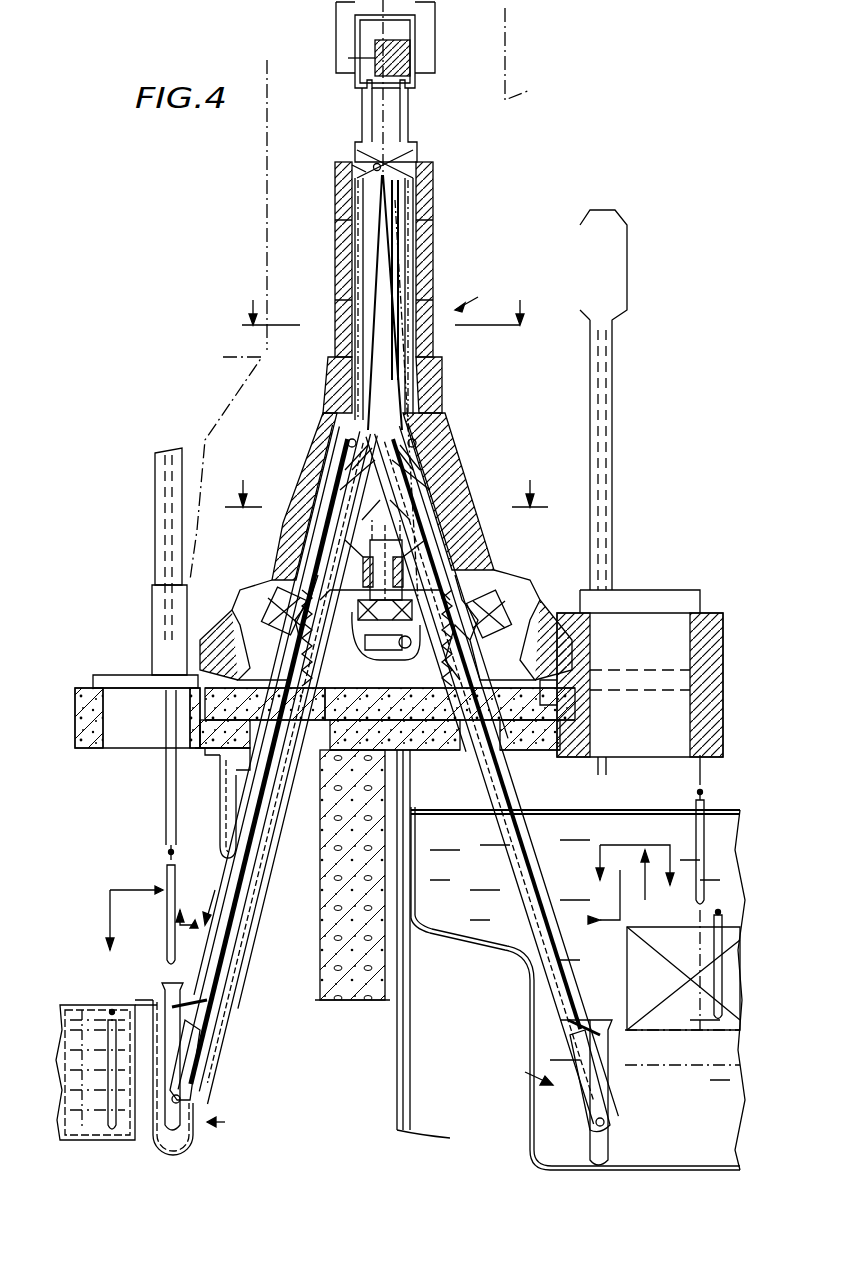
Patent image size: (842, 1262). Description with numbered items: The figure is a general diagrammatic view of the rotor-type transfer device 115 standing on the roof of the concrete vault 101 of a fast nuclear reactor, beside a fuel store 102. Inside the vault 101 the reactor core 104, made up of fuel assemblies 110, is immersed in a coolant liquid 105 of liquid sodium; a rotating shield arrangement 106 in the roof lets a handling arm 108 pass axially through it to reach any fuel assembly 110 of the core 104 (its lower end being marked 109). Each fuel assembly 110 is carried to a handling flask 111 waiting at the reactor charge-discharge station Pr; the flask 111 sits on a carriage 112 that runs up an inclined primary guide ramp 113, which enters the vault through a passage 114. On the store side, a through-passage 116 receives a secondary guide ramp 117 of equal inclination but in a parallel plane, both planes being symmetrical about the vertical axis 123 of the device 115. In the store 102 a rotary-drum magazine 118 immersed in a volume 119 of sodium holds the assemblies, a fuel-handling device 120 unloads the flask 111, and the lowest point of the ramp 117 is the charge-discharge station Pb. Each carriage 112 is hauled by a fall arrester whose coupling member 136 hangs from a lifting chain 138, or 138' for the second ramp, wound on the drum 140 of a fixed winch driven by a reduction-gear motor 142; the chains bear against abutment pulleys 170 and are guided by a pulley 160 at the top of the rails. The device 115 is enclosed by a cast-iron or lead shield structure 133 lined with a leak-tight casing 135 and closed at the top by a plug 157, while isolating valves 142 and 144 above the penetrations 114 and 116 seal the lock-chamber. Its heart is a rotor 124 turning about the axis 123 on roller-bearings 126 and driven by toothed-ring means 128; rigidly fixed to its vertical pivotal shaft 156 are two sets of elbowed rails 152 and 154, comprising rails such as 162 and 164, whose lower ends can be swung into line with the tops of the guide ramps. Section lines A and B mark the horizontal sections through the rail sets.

The reduction-gear motor / valve 142 is at (345, 50).
The vertical axis 123 is at (398, 25).
The drum 140 is at (405, 98).
The lifting chain 138 is at (311, 541).
The lifting chain 138' is at (481, 499).
The plug 157 is at (418, 155).
The pulley 160 is at (352, 172).
The rotor 124 is at (404, 258).
The rail 162 is at (380, 290).
The transfer device 115 is at (489, 293).
The shield structure 133 is at (298, 390).
The abutment pulley 170 is at (325, 415).
The leak-tight casing 135 is at (300, 445).
The set of elbowed rails 152 is at (335, 495).
The set of elbowed rails 154 is at (430, 500).
The rail 164 is at (480, 505).
The vertical pivotal shaft 156 is at (330, 575).
The isolating valve 144 is at (490, 590).
The roller-bearings 126 is at (375, 645).
The drive means 128 is at (392, 663).
The fuel-handling device 120 is at (148, 622).
The fuel store 102 is at (115, 725).
The concrete vault 101 is at (545, 718).
The rotating shield arrangement 106 is at (710, 630).
The handling arm 108 is at (605, 395).
The rod end 109 is at (612, 768).
The fuel assembly 110 is at (166, 880).
The passage 114 is at (435, 770).
The primary guide ramp 113 is at (525, 912).
The coolant liquid 105 is at (557, 851).
The reactor core 104 is at (685, 990).
The magazine 118 is at (100, 1010).
The volume of liquid sodium 119 is at (108, 1000).
The handling flask 111 is at (605, 1105).
The through-passage 116 is at (205, 1060).
The secondary guide ramp 117 is at (210, 995).
The coupling member 136 is at (215, 1005).
The carriage 112 is at (588, 1095).
The charge-discharge station Pb is at (236, 1119).
The reactor charge-discharge station Pr is at (505, 1061).
The section line A- A is at (382, 179).
The section B is at (378, 468).